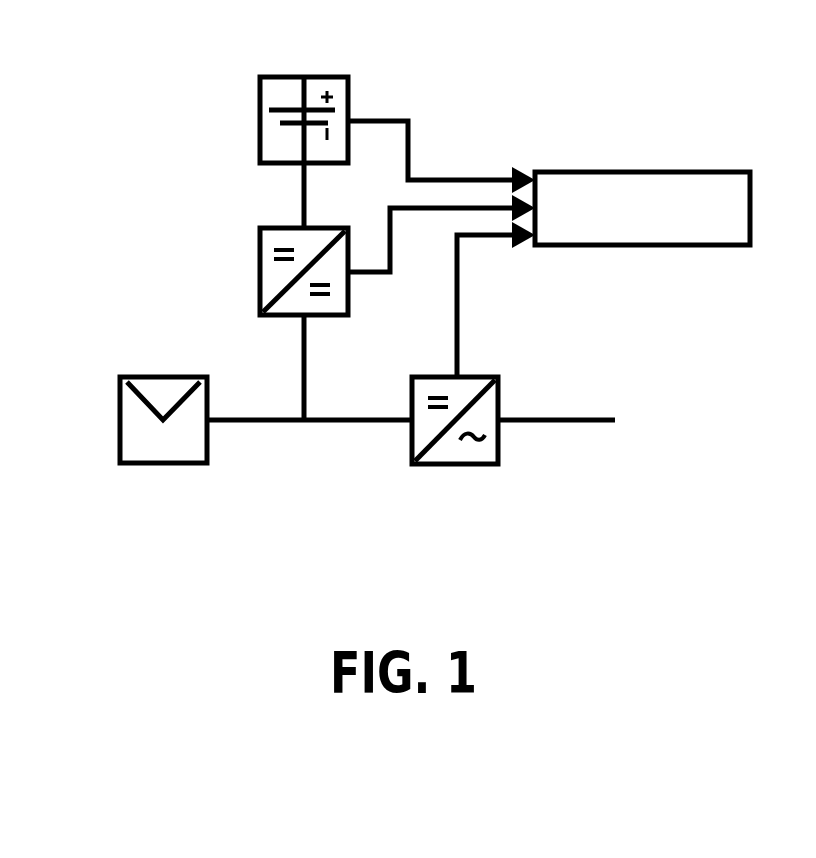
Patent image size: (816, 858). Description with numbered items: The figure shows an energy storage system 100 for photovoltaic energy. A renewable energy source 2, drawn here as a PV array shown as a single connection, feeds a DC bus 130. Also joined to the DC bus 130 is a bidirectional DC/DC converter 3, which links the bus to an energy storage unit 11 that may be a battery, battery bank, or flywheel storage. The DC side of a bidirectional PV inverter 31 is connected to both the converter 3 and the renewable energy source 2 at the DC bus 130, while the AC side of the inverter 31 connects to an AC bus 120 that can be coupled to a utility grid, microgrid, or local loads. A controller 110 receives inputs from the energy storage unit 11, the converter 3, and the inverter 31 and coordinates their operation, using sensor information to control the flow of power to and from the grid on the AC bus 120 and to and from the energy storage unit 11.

The energy storage system 100 is at (500, 47).
The energy storage unit 11 is at (304, 55).
The bidirectional DC/DC converter 3 is at (238, 285).
The controller 110 is at (549, 249).
The renewable energy source 2 is at (172, 485).
The DC bus 130 is at (309, 389).
The bidirectional PV inverter 31 is at (455, 488).
The AC bus 120 is at (588, 420).